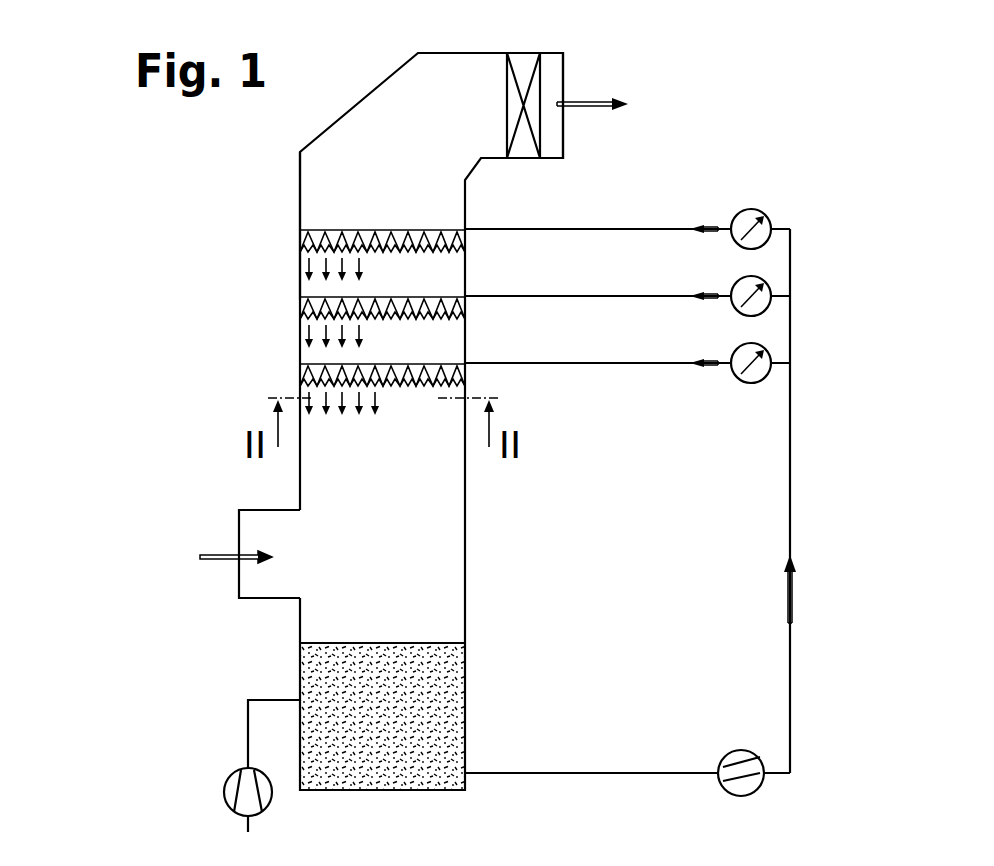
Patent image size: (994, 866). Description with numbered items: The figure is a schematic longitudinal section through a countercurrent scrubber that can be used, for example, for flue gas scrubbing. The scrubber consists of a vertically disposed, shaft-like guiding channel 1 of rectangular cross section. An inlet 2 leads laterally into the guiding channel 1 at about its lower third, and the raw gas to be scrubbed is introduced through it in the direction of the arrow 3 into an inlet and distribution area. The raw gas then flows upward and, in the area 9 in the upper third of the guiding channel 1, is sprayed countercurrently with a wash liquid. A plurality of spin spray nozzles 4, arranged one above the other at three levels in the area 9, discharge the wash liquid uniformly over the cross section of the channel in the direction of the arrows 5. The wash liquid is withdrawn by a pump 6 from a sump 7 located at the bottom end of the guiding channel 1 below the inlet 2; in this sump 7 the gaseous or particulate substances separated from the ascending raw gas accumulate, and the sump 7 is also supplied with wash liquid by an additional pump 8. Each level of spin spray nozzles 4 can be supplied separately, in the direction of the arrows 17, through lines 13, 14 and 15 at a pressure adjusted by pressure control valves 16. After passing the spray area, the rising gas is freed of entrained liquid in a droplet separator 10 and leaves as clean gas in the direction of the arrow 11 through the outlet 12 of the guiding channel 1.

The guiding channel 1 is at (465, 517).
The inlet 2 is at (265, 601).
The arrow 3 is at (214, 552).
The spin spray nozzles 4 is at (300, 363).
The arrows 5 is at (359, 395).
The pump 6 is at (741, 763).
The sump 7 is at (448, 706).
The additional pump 8 is at (240, 790).
The area 9 is at (286, 256).
The droplet separator 10 is at (524, 153).
The arrow 11 is at (580, 110).
The outlet 12 is at (490, 160).
The line 13 is at (578, 366).
The line 14 is at (578, 299).
The line 15 is at (578, 232).
The pressure control valves 16 is at (808, 339).
The arrows 17 is at (795, 585).